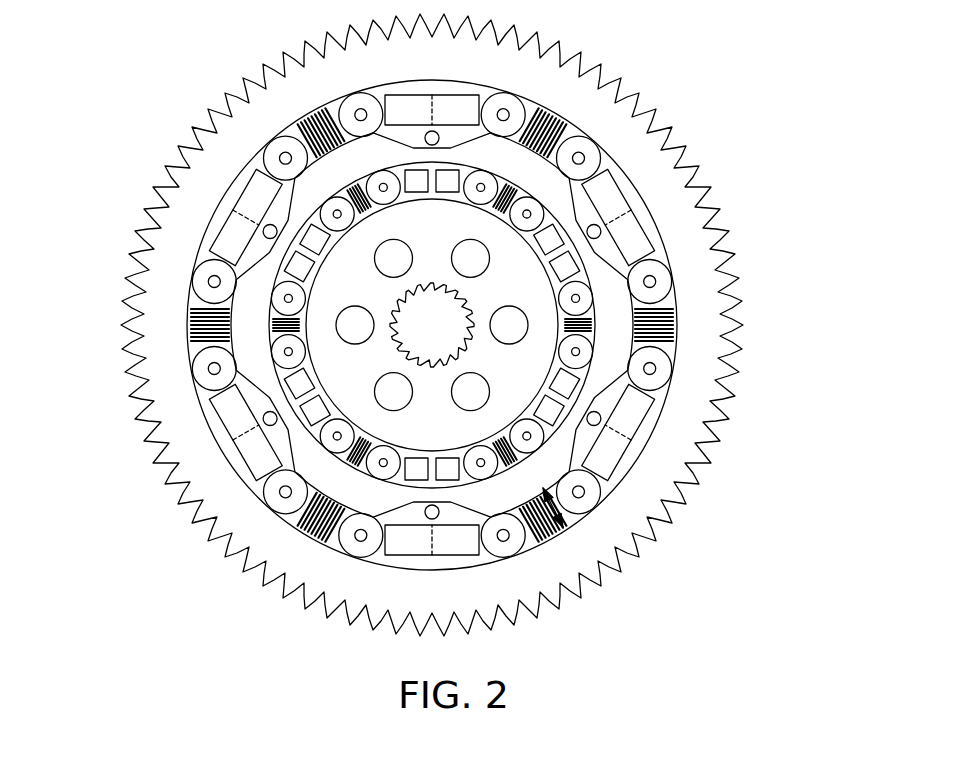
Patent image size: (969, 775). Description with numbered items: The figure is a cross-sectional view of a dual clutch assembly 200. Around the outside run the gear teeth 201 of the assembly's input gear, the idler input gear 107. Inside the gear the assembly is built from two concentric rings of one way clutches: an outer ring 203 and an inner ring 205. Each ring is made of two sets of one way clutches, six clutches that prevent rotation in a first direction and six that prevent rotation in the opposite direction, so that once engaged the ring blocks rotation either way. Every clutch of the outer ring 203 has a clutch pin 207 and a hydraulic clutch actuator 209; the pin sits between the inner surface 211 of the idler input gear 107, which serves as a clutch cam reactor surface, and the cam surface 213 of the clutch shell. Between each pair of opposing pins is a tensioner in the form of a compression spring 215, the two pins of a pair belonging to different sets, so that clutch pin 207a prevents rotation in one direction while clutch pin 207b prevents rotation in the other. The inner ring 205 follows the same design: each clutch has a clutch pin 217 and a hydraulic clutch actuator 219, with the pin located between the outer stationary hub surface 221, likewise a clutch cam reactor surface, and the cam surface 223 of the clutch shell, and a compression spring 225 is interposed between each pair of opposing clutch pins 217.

The idler input gear 107 is at (307, 82).
The dual clutch assembly 200 is at (692, 98).
The gear teeth 201 is at (735, 228).
The outer ring 203 is at (257, 187).
The inner ring 205 is at (318, 240).
The clutch pin 207 is at (587, 506).
The clutch pin 207a is at (275, 505).
The clutch pin 207b is at (355, 548).
The hydraulic clutch actuator 209 is at (608, 452).
The inner surface 211 is at (542, 540).
The cam surface 213 is at (565, 526).
The spring 215 is at (535, 517).
The clutch pin 217 is at (585, 352).
The hydraulic clutch actuator 219 is at (563, 383).
The outer stationary hub surface 221 is at (563, 323).
The cam surface 223 is at (280, 332).
The spring 225 is at (563, 324).